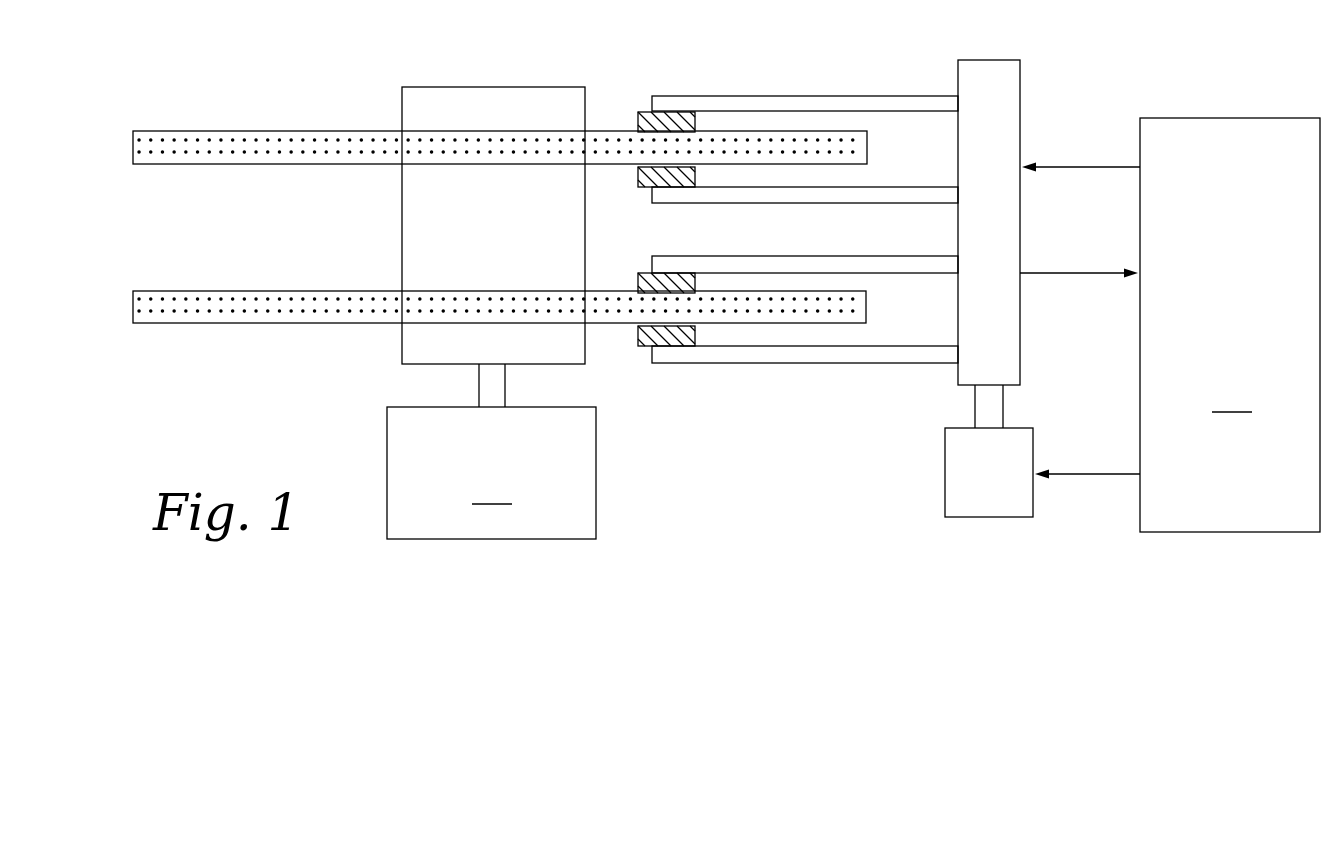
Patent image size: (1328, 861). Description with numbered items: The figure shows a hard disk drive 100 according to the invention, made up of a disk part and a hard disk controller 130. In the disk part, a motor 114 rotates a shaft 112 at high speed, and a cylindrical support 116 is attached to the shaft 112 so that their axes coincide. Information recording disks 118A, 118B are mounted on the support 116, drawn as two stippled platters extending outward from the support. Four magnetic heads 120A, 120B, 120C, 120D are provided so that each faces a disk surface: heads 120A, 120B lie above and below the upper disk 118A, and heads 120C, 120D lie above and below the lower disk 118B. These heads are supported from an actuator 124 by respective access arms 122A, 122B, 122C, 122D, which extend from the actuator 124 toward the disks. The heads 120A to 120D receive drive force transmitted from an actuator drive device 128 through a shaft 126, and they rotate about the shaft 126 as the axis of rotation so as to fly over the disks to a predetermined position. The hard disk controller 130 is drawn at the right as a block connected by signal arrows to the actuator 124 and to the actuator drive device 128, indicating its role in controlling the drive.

The hard disk drive 100 is at (282, 85).
The shaft 112 is at (478, 381).
The motor 114 is at (491, 473).
The cylindrical support 116 is at (446, 87).
The information recording disk 118A is at (163, 131).
The information recording disk 118B is at (162, 323).
The magnetic head 120A is at (645, 118).
The magnetic head 120B is at (646, 180).
The magnetic head 120C is at (648, 276).
The magnetic head 120D is at (642, 346).
The access arm 122A is at (766, 96).
The access arm 122B is at (812, 205).
The access arm 122C is at (790, 256).
The access arm 122D is at (778, 364).
The actuator 124 is at (1022, 77).
The shaft 126 is at (970, 421).
The actuator drive device 128 is at (943, 482).
The hard disk controller 130 is at (1230, 325).